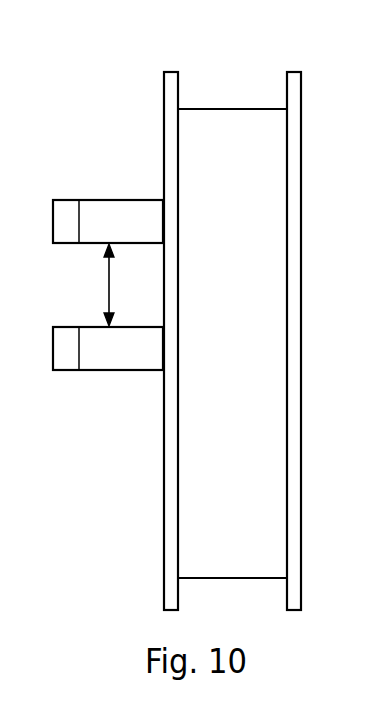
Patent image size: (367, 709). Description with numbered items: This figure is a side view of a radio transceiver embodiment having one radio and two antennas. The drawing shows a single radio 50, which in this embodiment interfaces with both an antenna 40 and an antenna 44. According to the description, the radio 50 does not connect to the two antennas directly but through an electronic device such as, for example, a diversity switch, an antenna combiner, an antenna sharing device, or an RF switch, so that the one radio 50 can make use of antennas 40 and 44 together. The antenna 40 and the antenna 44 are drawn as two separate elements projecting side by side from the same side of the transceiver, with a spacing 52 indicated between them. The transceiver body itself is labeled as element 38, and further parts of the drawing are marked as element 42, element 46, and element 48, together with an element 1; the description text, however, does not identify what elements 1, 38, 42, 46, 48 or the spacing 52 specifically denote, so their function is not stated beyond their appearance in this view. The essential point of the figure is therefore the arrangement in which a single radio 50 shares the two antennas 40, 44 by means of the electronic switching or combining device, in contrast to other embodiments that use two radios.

The device 1 is at (361, 279).
The plate 38 is at (223, 50).
The antenna 40 is at (66, 200).
The first projection 42 is at (124, 200).
The antenna 44 is at (66, 372).
The second projection 46 is at (130, 372).
The upper wall 48 is at (164, 575).
The radio 50 is at (240, 580).
The spacing 52 is at (108, 290).